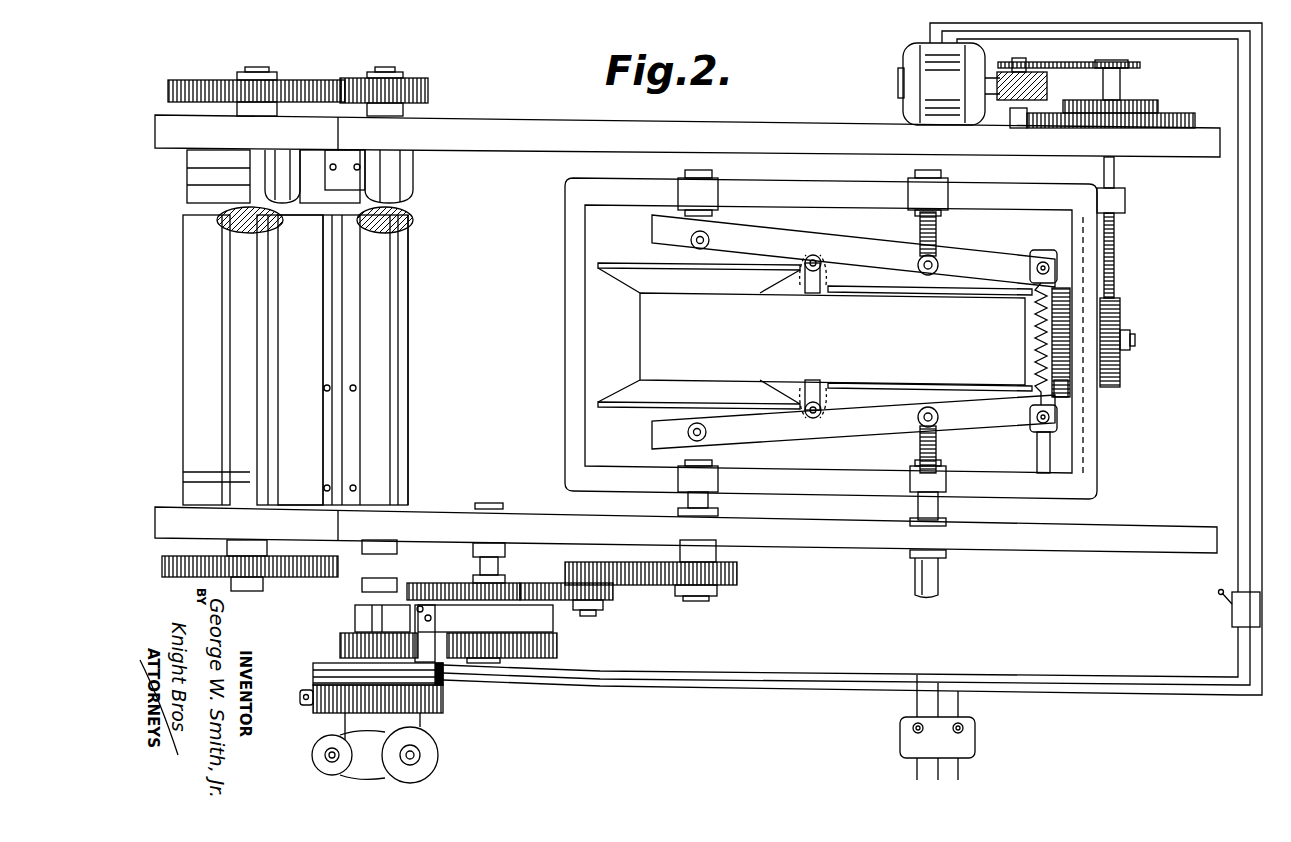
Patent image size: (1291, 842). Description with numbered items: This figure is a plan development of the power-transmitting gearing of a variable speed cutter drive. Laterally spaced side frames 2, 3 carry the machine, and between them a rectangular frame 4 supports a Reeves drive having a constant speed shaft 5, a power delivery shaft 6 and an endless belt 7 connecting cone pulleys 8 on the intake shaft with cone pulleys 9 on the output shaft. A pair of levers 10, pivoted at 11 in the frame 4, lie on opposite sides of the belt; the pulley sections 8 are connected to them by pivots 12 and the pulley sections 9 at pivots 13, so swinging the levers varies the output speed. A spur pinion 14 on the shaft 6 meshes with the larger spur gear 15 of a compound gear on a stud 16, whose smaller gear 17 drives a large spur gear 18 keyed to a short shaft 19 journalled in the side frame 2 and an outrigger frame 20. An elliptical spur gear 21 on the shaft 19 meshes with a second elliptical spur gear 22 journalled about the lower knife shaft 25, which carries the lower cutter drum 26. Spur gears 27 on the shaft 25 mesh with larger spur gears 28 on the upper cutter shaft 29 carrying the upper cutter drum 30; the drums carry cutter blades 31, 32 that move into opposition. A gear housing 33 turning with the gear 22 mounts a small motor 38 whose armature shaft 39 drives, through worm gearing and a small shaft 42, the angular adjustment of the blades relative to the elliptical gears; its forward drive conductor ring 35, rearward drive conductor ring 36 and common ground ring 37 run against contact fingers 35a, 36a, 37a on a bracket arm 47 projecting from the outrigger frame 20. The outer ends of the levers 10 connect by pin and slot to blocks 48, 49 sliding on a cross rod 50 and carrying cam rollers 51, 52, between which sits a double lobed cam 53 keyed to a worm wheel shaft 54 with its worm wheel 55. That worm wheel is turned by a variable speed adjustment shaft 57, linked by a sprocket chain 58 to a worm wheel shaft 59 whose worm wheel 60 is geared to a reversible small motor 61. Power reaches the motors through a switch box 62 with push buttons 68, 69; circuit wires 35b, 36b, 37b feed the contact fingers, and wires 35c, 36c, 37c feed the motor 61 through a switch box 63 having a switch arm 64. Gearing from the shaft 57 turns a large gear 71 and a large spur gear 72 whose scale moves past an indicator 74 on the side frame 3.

The side frame 2 is at (1066, 545).
The side frame 3 is at (524, 124).
The rectangular frame 4 is at (565, 414).
The constant speed shaft 5 is at (940, 585).
The power delivery shaft 6 is at (700, 601).
The endless belt 7 is at (650, 340).
The cone pulleys 8 is at (862, 286).
The cone pulleys 9 is at (660, 262).
The levers 10 is at (752, 235).
The pivots 11 is at (812, 255).
The pivots 12 is at (936, 262).
The pivots 13 is at (690, 240).
The spur pinion 14 is at (738, 575).
The larger spur gear 15 is at (633, 586).
The stud 16 is at (592, 610).
The smaller gear 17 is at (600, 612).
The large spur gear 18 is at (446, 583).
The short shaft 19 is at (488, 505).
The outrigger frame 20 is at (553, 619).
The elliptical spur gear 21 is at (557, 650).
The second elliptical spur gear 22 is at (340, 642).
The lower knife shaft 25 is at (370, 590).
The lower cutter drum 26 is at (392, 407).
The spur gears 27 is at (430, 91).
The larger spur gears 28 is at (200, 80).
The upper cutter shaft 29 is at (250, 578).
The upper cutter drum 30 is at (232, 370).
The cutter blades 31 is at (352, 347).
The cutter blades 32 is at (330, 303).
The gear housing 33 is at (313, 706).
The forward drive conductor ring 35 is at (313, 680).
The rearward drive conductor ring 36 is at (313, 673).
The common ground ring 37 is at (313, 666).
The contact finger 35a is at (443, 690).
The contact finger 36a is at (443, 678).
The contact finger 37a is at (443, 668).
The circuit wire 35b is at (1080, 678).
The circuit wire 36b is at (1122, 686).
The circuit wire 37b is at (1172, 694).
The wire 35c is at (1238, 346).
The wire 36c is at (1250, 306).
The wire 37c is at (1262, 262).
The small motor 38 is at (352, 777).
The armature shaft 39 is at (424, 758).
The small shaft 42 is at (325, 753).
The bracket arm 47 is at (432, 630).
The block 48 is at (1058, 420).
The block 49 is at (1050, 262).
The cross rod 50 is at (1060, 463).
The cam roller 51 is at (1064, 395).
The cam roller 52 is at (1058, 295).
The double lobed cam 53 is at (1040, 340).
The worm wheel shaft 54 is at (1130, 338).
The worm wheel 55 is at (1134, 345).
The variable speed adjustment shaft 57 is at (1112, 62).
The sprocket chain 58 is at (1060, 62).
The worm wheel shaft 59 is at (1020, 62).
The worm wheel 60 is at (1049, 86).
The small motor 61 is at (938, 66).
The switch box 62 is at (900, 747).
The switch box 63 is at (1255, 627).
The switch arm 64 is at (1228, 602).
The push button 68 is at (912, 728).
The push button 69 is at (964, 728).
The large gear 71 is at (1140, 104).
The large spur gear 72 is at (1182, 120).
The indicator 74 is at (1014, 112).